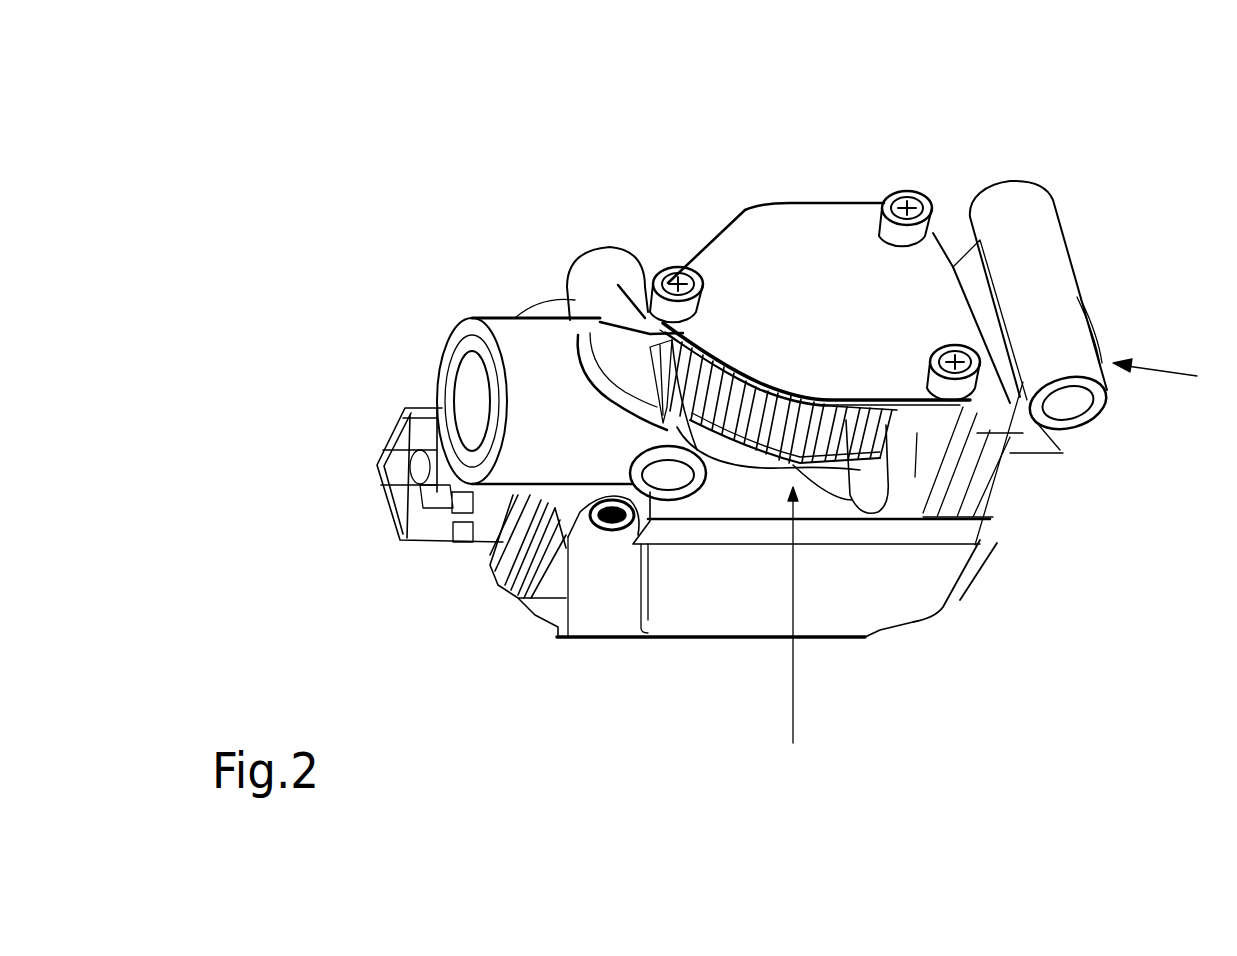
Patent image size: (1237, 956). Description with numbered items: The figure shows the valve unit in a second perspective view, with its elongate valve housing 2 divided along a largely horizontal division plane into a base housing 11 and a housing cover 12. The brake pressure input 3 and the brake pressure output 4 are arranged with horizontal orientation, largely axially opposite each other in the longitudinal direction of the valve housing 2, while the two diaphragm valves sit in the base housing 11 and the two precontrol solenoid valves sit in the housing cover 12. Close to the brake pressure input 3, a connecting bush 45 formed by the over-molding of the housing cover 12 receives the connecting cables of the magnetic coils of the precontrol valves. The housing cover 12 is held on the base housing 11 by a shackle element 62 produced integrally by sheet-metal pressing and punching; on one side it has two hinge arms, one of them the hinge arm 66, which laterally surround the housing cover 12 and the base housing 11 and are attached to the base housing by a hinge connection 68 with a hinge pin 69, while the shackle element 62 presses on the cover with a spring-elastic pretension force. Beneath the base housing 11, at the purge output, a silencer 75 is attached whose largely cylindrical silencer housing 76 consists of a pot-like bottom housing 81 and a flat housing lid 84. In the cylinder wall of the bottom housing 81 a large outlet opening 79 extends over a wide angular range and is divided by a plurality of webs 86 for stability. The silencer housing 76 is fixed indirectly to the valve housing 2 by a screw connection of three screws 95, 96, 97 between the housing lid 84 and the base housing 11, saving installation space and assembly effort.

The valve housing 2 is at (892, 409).
The brake pressure input 3 is at (472, 400).
The brake pressure output 4 is at (1170, 377).
The base housing 11 is at (1030, 273).
The housing cover 12 is at (903, 587).
The connecting bush 45 is at (398, 473).
The shackle element 62 is at (546, 639).
The hinge arm 66 is at (603, 583).
The fastening screw 68 is at (423, 563).
The hinge pin 69 is at (600, 525).
The silencer 75 is at (794, 635).
The silencer housing 76 is at (861, 421).
The outlet opening 79 is at (770, 557).
The bottom housing 81 is at (878, 445).
The housing lid 84 is at (815, 272).
The webs 86 is at (752, 430).
The screw 95 is at (666, 266).
The screw 96 is at (905, 190).
The screw 97 is at (962, 376).